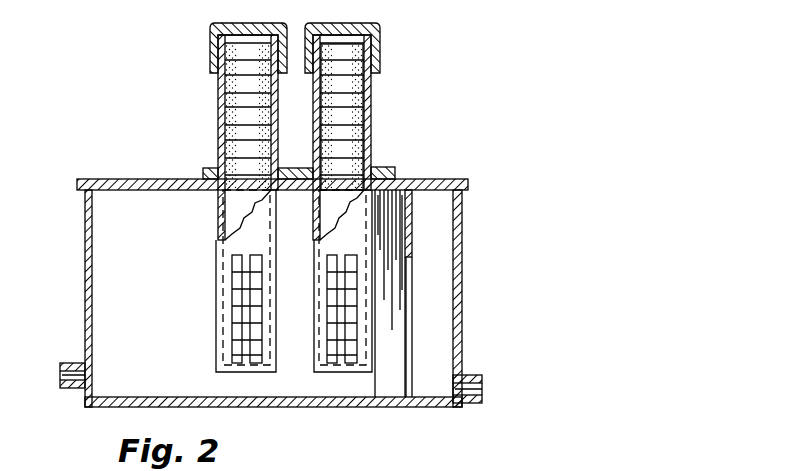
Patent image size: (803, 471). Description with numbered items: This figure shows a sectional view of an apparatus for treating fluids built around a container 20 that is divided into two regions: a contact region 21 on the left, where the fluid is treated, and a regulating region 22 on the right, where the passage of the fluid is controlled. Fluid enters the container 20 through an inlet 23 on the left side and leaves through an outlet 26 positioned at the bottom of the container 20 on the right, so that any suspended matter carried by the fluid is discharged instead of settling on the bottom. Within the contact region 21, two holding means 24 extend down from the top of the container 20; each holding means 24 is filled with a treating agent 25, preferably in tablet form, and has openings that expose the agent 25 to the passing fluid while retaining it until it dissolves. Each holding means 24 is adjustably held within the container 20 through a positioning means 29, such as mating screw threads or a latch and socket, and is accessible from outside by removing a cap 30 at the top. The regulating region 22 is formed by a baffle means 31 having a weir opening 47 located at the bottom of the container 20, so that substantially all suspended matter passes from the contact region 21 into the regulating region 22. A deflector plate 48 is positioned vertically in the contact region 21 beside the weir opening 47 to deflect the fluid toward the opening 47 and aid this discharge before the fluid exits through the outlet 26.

The container 20 is at (462, 224).
The contact region 21 is at (403, 411).
The regulating region 22 is at (453, 411).
The inlet 23 is at (72, 363).
The holding means 24 is at (373, 98).
The treating agent 25 is at (366, 130).
The outlet 26 is at (474, 375).
The positioning means 29 is at (395, 167).
The cap 30 is at (381, 46).
The baffle means 31 is at (412, 248).
The weir opening 47 is at (407, 291).
The deflector plate 48 is at (396, 336).